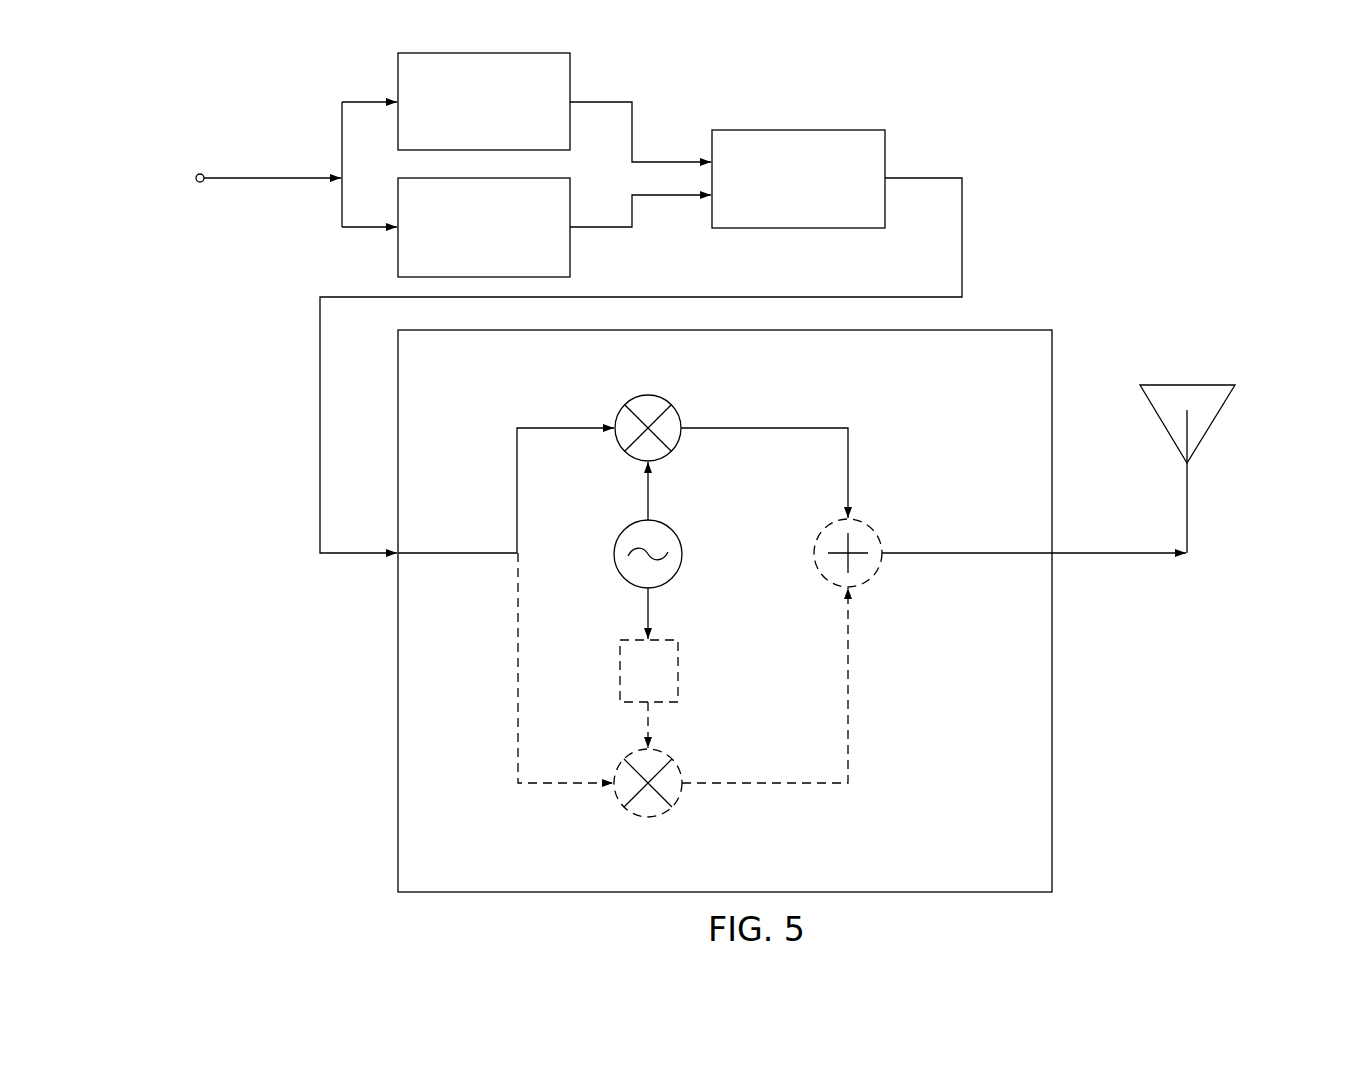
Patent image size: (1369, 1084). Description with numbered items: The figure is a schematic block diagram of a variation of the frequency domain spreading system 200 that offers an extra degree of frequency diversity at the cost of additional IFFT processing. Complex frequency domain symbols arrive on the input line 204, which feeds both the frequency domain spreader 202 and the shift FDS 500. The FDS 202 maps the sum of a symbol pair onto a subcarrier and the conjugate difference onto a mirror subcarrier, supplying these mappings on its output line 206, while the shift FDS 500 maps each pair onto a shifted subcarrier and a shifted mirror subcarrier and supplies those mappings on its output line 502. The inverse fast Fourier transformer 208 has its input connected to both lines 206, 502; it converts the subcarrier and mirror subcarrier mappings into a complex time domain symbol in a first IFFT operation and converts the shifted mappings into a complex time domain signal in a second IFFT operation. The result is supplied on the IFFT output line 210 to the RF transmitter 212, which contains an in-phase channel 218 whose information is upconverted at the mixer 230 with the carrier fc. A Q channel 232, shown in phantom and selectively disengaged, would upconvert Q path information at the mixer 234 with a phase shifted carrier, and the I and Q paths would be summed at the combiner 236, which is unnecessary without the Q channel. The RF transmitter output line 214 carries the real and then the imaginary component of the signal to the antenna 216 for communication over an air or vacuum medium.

The frequency domain spreading system 200 is at (1167, 132).
The frequency domain spreader 202 is at (464, 131).
The input line 204 is at (303, 177).
The FDS output line 206 is at (613, 98).
The inverse fast Fourier transformer 208 is at (777, 208).
The IFFT output line 210 is at (938, 177).
The RF transmitter 212 is at (662, 875).
The RF transmitter output line 214 is at (1090, 553).
The antenna 216 is at (1217, 385).
The in-phase channel 218 is at (880, 417).
The mixer 230 is at (647, 393).
The Q channel 232 is at (892, 790).
The mixer 234 is at (673, 760).
The combiner 236 is at (867, 523).
The shift FDS 500 is at (464, 256).
The shift FDS output line 502 is at (612, 229).